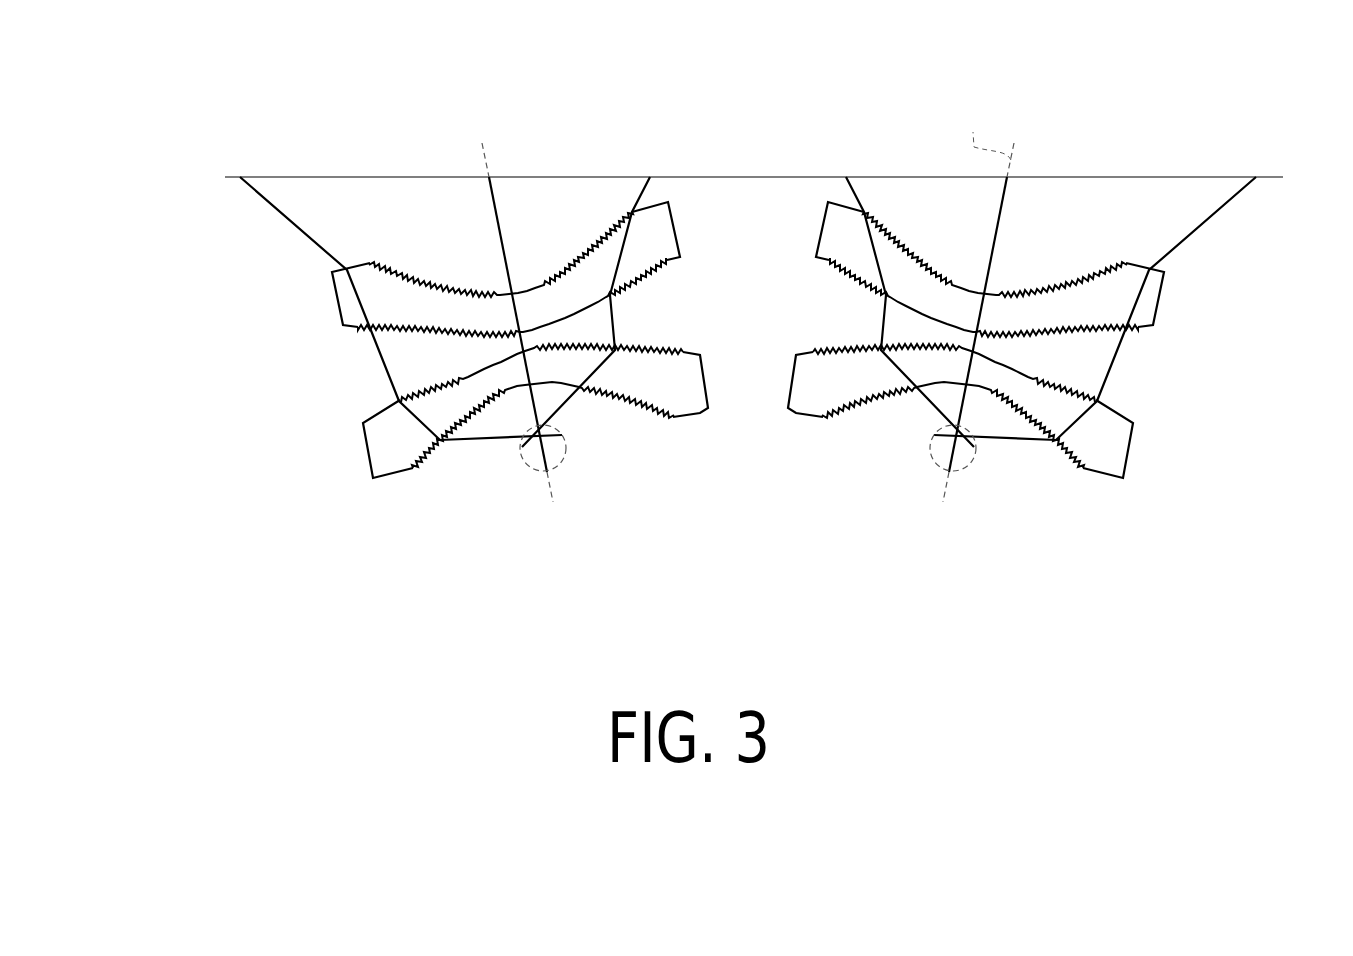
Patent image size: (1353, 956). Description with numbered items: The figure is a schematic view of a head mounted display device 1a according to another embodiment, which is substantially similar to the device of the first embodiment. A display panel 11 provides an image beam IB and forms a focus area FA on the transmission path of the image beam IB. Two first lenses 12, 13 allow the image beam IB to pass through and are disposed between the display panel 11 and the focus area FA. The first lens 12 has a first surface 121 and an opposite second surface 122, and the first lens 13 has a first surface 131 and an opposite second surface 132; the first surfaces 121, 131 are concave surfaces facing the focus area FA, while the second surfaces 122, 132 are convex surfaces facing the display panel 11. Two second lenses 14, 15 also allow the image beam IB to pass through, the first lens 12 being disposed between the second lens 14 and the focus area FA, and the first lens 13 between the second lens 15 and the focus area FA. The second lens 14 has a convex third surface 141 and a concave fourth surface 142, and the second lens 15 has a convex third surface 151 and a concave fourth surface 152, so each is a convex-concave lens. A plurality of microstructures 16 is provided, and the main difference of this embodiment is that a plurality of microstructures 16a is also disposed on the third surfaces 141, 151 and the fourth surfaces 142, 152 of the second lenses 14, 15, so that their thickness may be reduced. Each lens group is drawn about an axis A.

The head mounted display device 1a is at (1187, 79).
The display panel 11 is at (272, 177).
The first lens 12 is at (439, 448).
The first surface 121 is at (454, 467).
The second surface 122 is at (368, 418).
The first lens 13 is at (1057, 429).
The first surface 131 is at (1106, 478).
The second surface 132 is at (1128, 418).
The second lens 14 is at (425, 296).
The third surface 141 is at (352, 326).
The fourth surface 142 is at (434, 273).
The second lens 15 is at (1071, 297).
The third surface 151 is at (1144, 326).
The fourth surface 152 is at (1166, 268).
The microstructures 16 is at (428, 462).
The microstructures 16a is at (492, 250).
The image beam IB is at (303, 240).
The optical axis A is at (485, 160).
The focus area FA is at (523, 467).